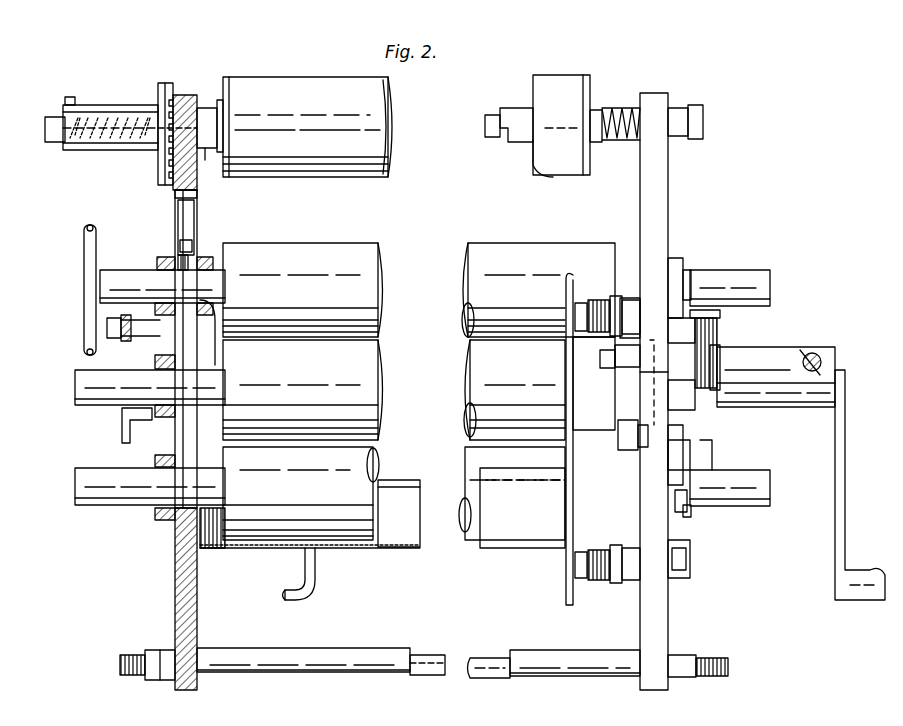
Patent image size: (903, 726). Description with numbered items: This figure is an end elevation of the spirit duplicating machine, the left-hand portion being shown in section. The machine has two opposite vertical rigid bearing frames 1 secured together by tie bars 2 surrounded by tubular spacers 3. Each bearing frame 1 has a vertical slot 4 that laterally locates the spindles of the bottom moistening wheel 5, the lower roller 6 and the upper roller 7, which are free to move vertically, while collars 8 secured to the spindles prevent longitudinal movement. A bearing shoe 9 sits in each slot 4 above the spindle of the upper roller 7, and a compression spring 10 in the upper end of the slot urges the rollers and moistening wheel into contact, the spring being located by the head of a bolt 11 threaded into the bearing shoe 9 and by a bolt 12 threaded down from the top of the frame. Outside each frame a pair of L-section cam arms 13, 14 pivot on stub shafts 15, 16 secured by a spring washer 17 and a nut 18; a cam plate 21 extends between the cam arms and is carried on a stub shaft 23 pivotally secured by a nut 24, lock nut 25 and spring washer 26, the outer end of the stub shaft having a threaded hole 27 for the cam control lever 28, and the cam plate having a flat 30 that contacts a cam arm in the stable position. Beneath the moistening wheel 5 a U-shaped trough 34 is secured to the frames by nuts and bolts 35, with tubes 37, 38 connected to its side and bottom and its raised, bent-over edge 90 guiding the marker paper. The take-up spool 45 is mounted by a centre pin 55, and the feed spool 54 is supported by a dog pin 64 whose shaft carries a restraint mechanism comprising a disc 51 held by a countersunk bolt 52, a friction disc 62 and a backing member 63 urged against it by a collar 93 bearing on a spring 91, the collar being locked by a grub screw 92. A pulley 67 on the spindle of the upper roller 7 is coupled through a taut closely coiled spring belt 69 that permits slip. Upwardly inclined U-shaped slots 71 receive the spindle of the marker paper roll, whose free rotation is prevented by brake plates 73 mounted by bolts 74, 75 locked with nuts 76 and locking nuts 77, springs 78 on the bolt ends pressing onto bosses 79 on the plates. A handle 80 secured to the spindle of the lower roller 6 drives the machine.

The bearing frame 1 is at (175, 537).
The tie bar 2 is at (422, 658).
The tubular spacer 3 is at (228, 652).
The vertical slot 4 is at (190, 339).
The bottom moistening wheel 5 is at (318, 482).
The lower roller 6 is at (310, 370).
The upper roller 7 is at (308, 280).
The collar 8 is at (158, 262).
The bearing shoe 9 is at (192, 258).
The compression spring 10 is at (175, 178).
The bolt 11 is at (178, 240).
The bolt 12 is at (205, 108).
The cam arm 13 is at (122, 437).
The cam arm 14 is at (118, 340).
The stub shaft 15 is at (700, 425).
The stub shaft 16 is at (145, 338).
The spring washer 17 is at (645, 448).
The nut 18 is at (625, 450).
The cam plate 21 is at (718, 352).
The stub shaft 23 is at (800, 358).
The nut 24 is at (640, 376).
The lock nut 25 is at (610, 365).
The spring washer 26 is at (668, 380).
The threaded hole 27 is at (818, 356).
The cam control lever 28 is at (822, 366).
The flat 30 is at (722, 368).
The trough 34 is at (405, 548).
The nuts and bolts 35 is at (686, 512).
The tube 37 is at (220, 360).
The tube 38 is at (285, 592).
The take-up spool 45 is at (578, 168).
The disc 51 is at (184, 133).
The countersunk bolt 52 is at (165, 155).
The feed spool 54 is at (326, 177).
The centre pin 55 is at (625, 142).
The friction disc 62 is at (163, 124).
The backing member 63 is at (95, 115).
The dog pin 64 is at (209, 167).
The pulley 67 is at (84, 240).
The spring belt 69 is at (89, 277).
The U-shaped slot 71 is at (618, 352).
The brake plate 73 is at (573, 492).
The bolt 74 is at (690, 556).
The bolt 75 is at (690, 298).
The nut 76 is at (640, 265).
The locking nut 77 is at (616, 296).
The spring 78 is at (596, 298).
The boss 79 is at (578, 300).
The handle 80 is at (845, 395).
The edge 90 is at (540, 450).
The spring 91 is at (100, 118).
The grub screw 92 is at (70, 97).
The collar 93 is at (70, 148).